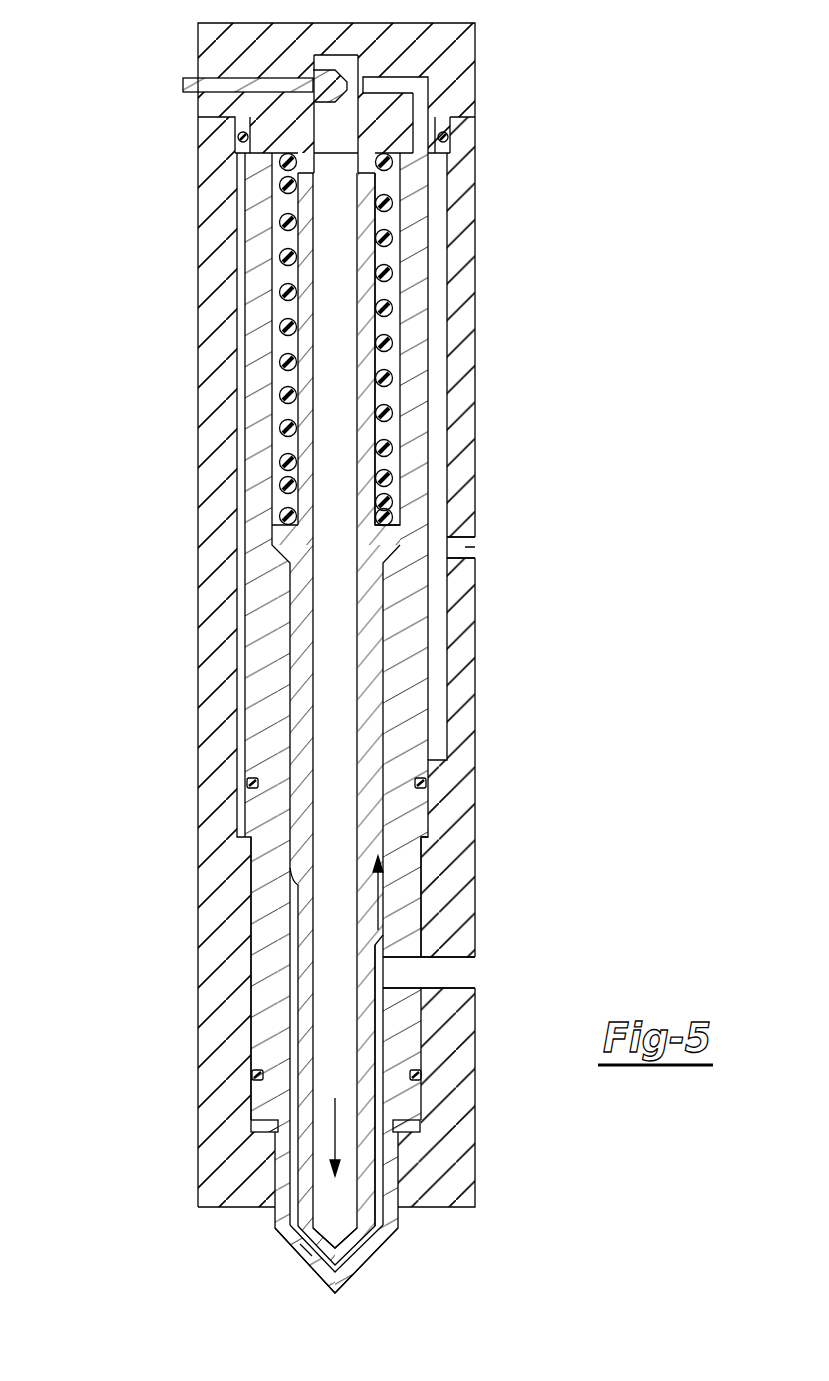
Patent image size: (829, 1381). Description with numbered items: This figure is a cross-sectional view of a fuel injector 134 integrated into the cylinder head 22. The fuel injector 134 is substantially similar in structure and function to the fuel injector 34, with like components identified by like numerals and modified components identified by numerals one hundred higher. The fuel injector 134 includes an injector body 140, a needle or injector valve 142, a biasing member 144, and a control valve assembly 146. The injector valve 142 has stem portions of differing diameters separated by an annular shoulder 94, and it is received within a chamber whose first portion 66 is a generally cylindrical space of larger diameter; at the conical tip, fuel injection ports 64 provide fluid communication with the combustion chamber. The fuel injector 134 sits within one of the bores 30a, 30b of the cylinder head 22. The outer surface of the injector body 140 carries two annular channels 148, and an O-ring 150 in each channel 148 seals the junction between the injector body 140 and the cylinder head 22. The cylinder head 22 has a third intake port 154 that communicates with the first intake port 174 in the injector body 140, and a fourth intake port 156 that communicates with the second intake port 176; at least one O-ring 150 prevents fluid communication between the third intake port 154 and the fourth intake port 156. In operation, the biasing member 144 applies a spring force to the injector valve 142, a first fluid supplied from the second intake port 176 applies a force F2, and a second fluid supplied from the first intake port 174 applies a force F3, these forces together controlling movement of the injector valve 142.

The cylinder head 22 is at (213, 310).
The fuel injector 134 is at (484, 107).
The first intake port 174 is at (390, 85).
The control valve assembly 146 is at (188, 78).
The injector body 140 is at (416, 290).
The biasing member 144 is at (284, 163).
The annular shoulder 94 is at (296, 878).
The first portion of the chamber 66 is at (387, 258).
The bore 30a is at (374, 1176).
The bore 30b is at (335, 1238).
The fuel injector 34 is at (268, 1227).
The fuel injection ports 64 is at (308, 1258).
The injector valve 142 is at (372, 822).
The third intake port 154 is at (466, 548).
The fourth intake port 156 is at (457, 971).
The second intake port 176 is at (400, 990).
The annular channel 148 is at (236, 124).
The O-ring 150 is at (238, 137).
The force applied by first fluid F2 is at (378, 904).
The force applied by second fluid F3 is at (335, 1098).